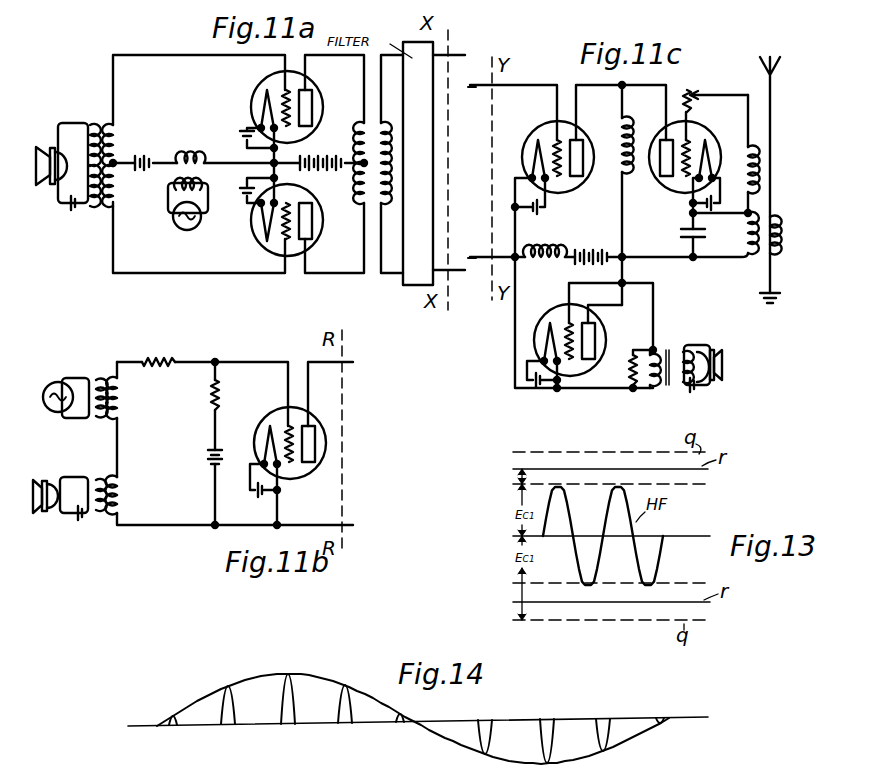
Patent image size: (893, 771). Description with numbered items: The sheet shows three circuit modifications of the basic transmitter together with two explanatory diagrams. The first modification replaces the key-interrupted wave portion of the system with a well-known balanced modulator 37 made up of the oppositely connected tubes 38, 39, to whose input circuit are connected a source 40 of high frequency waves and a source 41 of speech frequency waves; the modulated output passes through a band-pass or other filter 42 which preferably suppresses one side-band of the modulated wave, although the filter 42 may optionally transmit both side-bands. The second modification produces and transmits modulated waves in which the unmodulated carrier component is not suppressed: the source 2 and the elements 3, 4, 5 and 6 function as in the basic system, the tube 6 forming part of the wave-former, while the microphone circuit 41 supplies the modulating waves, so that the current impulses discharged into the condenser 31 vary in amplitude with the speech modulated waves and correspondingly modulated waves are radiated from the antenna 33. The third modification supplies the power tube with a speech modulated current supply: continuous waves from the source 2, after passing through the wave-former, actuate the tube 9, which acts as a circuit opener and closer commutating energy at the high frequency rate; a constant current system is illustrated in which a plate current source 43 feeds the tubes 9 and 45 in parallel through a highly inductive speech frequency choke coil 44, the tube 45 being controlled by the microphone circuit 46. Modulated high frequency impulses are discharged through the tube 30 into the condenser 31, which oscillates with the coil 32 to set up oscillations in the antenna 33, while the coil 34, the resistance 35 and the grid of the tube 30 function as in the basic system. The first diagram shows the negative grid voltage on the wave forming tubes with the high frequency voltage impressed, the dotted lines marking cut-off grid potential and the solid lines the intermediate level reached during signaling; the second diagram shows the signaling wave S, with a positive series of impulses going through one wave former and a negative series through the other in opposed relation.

In FIG. 11b, the source 2 is at (56, 384).
In FIG. 11b, the element 3 is at (158, 356).
In FIG. 11b, the element 4 is at (207, 396).
In FIG. 11b, the element 5 is at (207, 457).
In FIG. 11b, the tube 6 is at (278, 420).
In FIG. 11c, the tube 9 is at (542, 125).
In FIG. 11c, the tube 30 is at (664, 132).
In FIG. 11c, the condenser 31 is at (680, 232).
In FIG. 11c, the coil 32 is at (744, 245).
In FIG. 11c, the antenna 33 is at (772, 196).
In FIG. 11c, the coil 34 is at (744, 155).
In FIG. 11c, the resistance 35 is at (692, 97).
In FIG. 11a, the balanced modulator 37 is at (238, 150).
In FIG. 11a, the tube 38 is at (258, 84).
In FIG. 11a, the tube 39 is at (260, 240).
In FIG. 11a, the source of high frequency waves 40 is at (178, 224).
In FIG. 11a, the source of speech frequency waves 41 is at (74, 124).
In FIG. 11b, the source of speech frequency waves 41 is at (70, 480).
In FIG. 11a, the filter 42 is at (400, 268).
In FIG. 11c, the plate current source 43 is at (592, 246).
In FIG. 11c, the speech frequency choke coil 44 is at (549, 246).
In FIG. 11c, the tube 45 is at (604, 342).
In FIG. 11c, the microphone circuit 46 is at (690, 345).
In FIG. 14, the signaling wave S is at (266, 676).